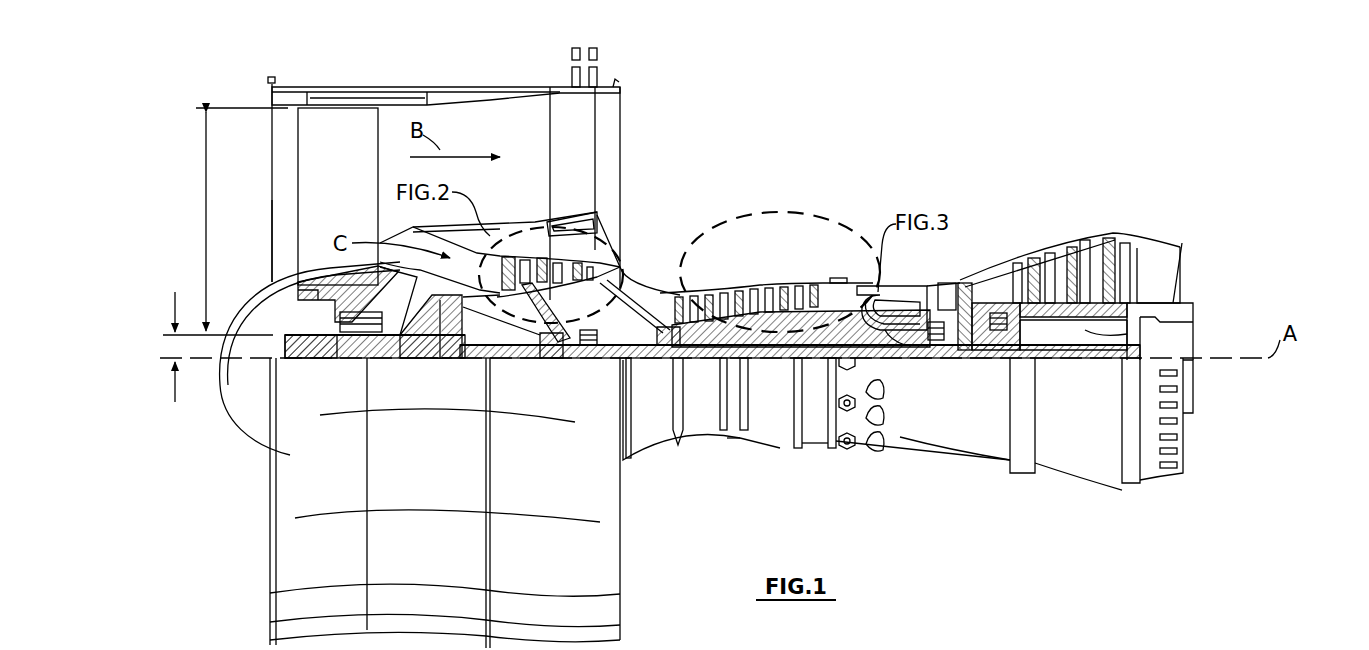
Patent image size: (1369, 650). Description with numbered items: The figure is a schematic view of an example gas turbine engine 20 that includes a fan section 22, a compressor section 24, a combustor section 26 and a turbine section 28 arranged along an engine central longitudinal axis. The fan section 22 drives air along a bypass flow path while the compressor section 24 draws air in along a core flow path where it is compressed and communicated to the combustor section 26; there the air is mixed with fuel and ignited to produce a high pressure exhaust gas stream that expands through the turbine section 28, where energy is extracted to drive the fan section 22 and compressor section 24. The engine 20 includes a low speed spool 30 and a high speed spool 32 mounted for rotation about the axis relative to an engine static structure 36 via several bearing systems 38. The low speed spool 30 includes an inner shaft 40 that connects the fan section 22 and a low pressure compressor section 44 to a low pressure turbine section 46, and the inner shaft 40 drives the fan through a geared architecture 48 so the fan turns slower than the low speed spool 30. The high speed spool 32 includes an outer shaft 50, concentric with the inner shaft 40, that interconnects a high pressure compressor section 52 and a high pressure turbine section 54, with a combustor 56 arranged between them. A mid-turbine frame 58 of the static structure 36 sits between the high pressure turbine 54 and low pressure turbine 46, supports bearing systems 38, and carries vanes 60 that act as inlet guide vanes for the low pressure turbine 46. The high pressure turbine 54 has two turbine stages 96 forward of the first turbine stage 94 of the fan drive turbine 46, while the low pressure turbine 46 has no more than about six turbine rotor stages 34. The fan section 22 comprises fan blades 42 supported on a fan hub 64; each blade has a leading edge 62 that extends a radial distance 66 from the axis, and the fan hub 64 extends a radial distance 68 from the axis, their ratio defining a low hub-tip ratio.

The gas turbine engine 20 is at (878, 150).
The fan section 22 is at (476, 72).
The compressor section 24 is at (880, 200).
The combustor section 26 is at (970, 200).
The turbine section 28 is at (1140, 200).
The low speed spool 30 is at (776, 368).
The high speed spool 32 is at (820, 292).
The turbine rotor stages 34 is at (1060, 335).
The engine static structure 36 is at (812, 450).
The bearing systems 38 is at (340, 352).
The inner shaft 40 is at (640, 365).
The fan blades 42 is at (325, 206).
The low pressure compressor section 44 is at (598, 220).
The low pressure turbine section 46 is at (1072, 258).
The geared architecture 48 is at (455, 345).
The outer shaft 50 is at (898, 348).
The high pressure compressor section 52 is at (768, 306).
The high pressure turbine section 54 is at (950, 298).
The combustor 56 is at (884, 300).
The mid-turbine frame 58 is at (993, 267).
The vanes 60 is at (1025, 332).
The leading edge 62 is at (296, 218).
The fan hub 64 is at (283, 346).
The radial distance 66 is at (205, 178).
The radial distance 68 is at (175, 290).
The first turbine stage 94 is at (1030, 287).
The turbine stages 96 is at (940, 352).